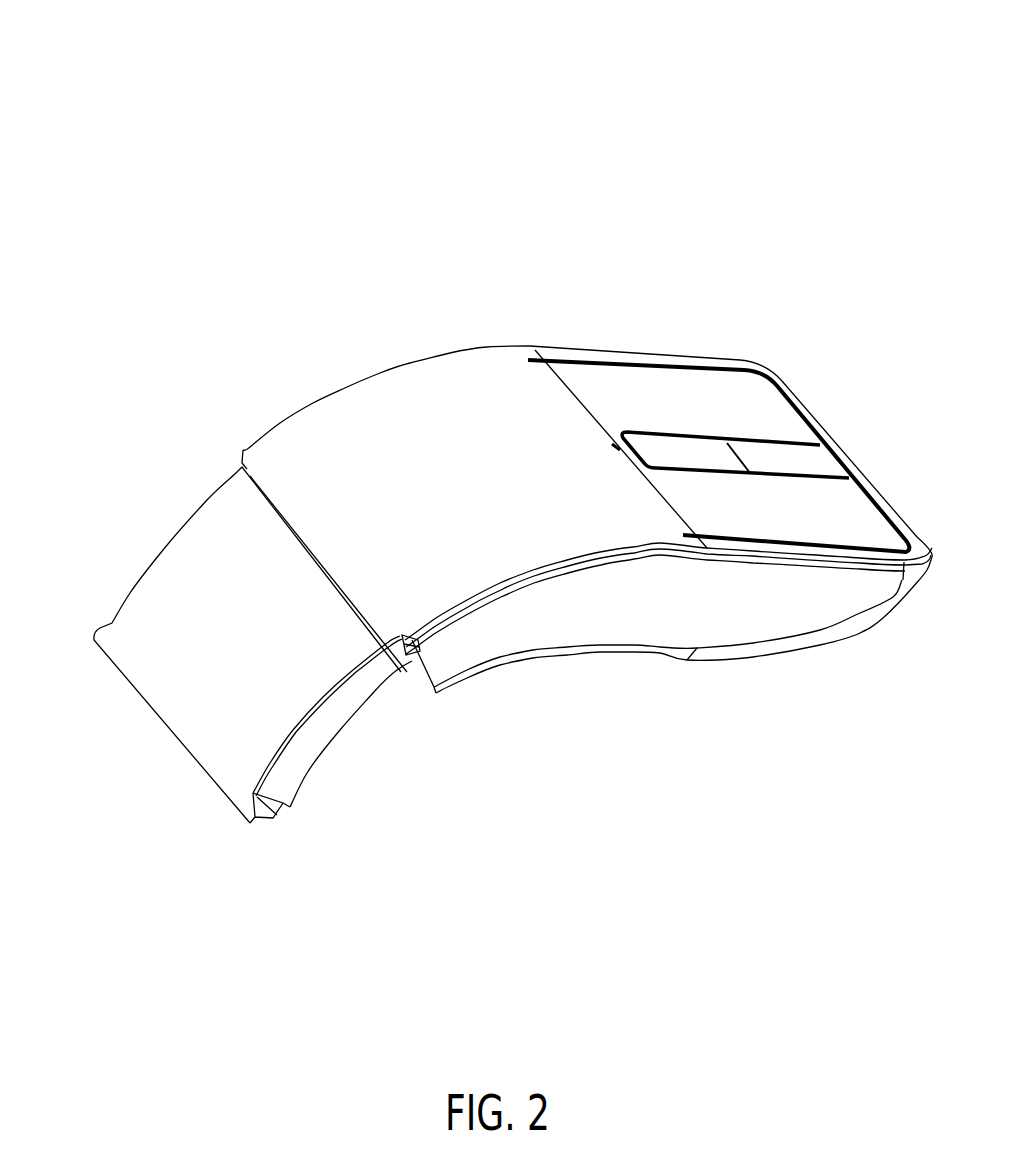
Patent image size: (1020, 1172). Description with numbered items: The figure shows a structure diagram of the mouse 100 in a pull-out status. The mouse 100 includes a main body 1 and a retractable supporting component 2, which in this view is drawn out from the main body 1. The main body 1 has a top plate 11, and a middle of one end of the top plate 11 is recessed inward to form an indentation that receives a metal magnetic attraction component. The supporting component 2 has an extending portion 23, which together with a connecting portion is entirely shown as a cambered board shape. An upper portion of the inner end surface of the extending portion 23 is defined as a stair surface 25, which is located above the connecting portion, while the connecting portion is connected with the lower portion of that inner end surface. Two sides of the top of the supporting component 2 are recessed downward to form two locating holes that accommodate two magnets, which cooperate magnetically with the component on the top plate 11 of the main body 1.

The mouse 100 is at (90, 50).
The main body 1 is at (487, 342).
The top plate 11 is at (360, 422).
The retractable supporting component 2 is at (182, 725).
The extending portion 23 is at (318, 737).
The stair surface 25 is at (403, 670).